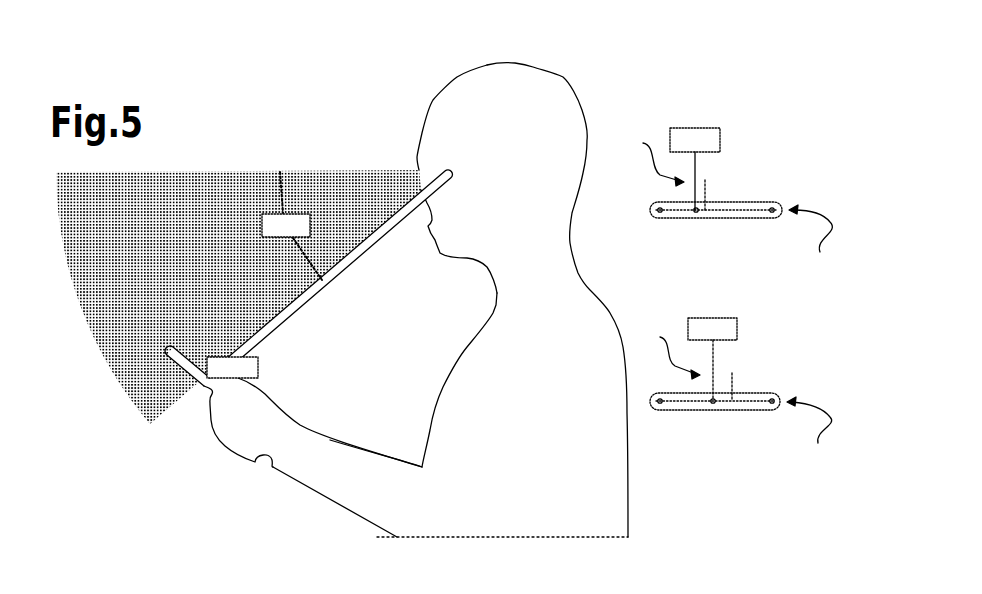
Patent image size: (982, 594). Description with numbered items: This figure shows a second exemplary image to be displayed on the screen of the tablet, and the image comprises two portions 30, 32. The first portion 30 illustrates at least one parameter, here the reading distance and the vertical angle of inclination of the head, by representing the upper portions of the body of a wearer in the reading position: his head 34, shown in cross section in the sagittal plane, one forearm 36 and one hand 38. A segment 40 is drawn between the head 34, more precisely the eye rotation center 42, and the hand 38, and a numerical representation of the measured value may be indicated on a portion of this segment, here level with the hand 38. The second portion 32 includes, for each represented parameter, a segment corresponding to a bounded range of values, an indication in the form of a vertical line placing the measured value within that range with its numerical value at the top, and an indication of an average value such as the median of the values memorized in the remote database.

The first portion 30 is at (560, 62).
The second portion 32 is at (780, 129).
The head 34 is at (460, 73).
The forearm 36 is at (327, 497).
The hand 38 is at (223, 432).
The segment 40 is at (313, 292).
The eye rotation center 42 is at (449, 174).